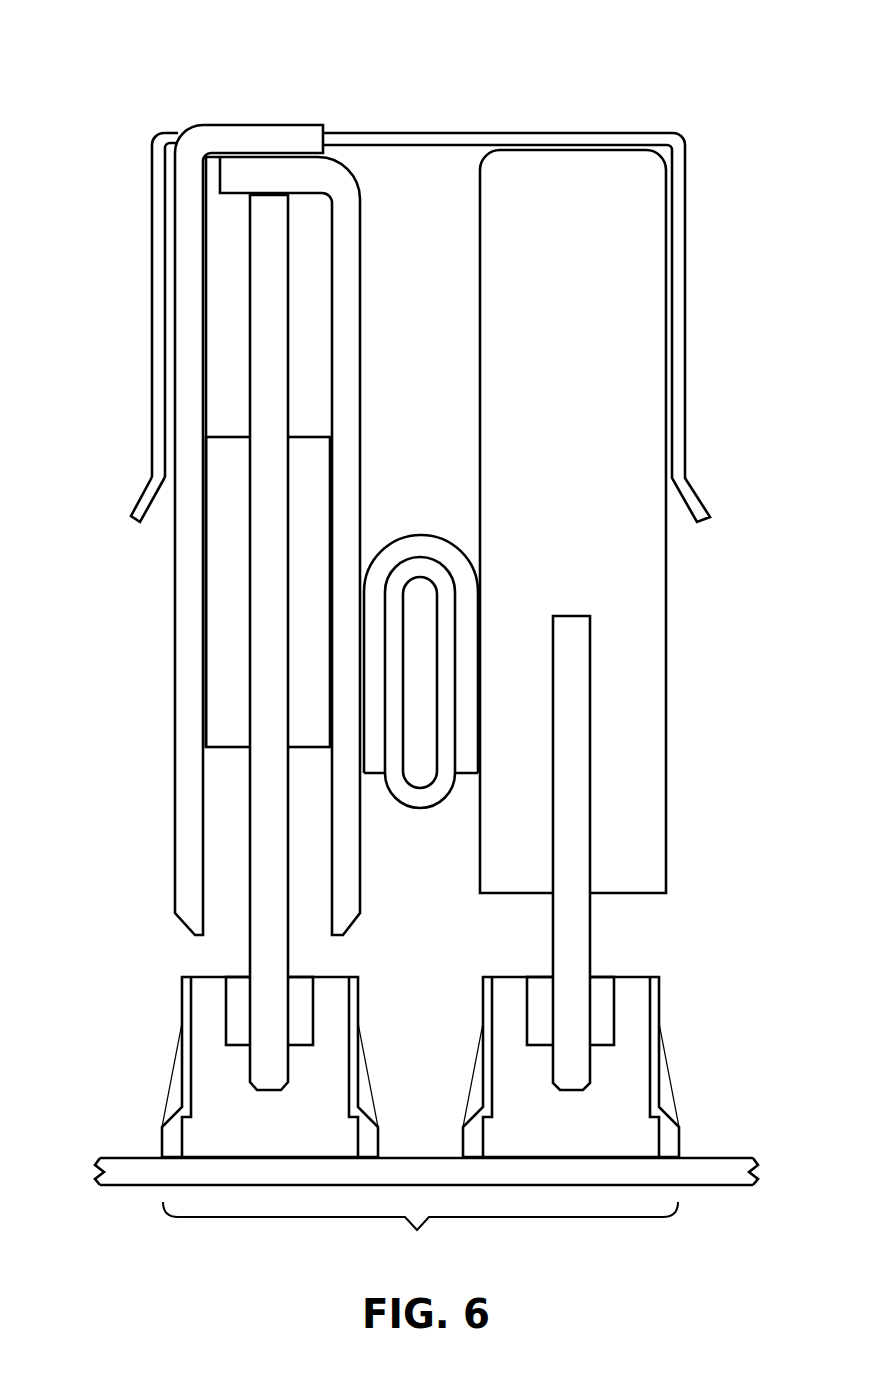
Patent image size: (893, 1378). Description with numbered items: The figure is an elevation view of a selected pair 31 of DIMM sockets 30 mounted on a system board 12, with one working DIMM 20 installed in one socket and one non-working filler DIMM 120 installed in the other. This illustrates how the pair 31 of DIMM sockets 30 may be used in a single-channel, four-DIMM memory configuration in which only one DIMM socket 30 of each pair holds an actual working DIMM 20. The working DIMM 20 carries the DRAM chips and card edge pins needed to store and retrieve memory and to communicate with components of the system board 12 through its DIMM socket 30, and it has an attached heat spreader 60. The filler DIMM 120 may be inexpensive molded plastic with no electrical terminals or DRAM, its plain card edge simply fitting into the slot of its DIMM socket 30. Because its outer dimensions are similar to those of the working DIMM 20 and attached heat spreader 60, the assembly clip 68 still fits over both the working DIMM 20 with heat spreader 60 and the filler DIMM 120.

The heat spreader 60 is at (290, 110).
The assembly clip 68 is at (487, 133).
The filler DIMM 120 is at (666, 232).
The working DIMM 20 is at (250, 323).
The DIMM socket 30 is at (182, 995).
The system board 12 is at (123, 1168).
The pair of DIMM sockets 31 is at (420, 1234).